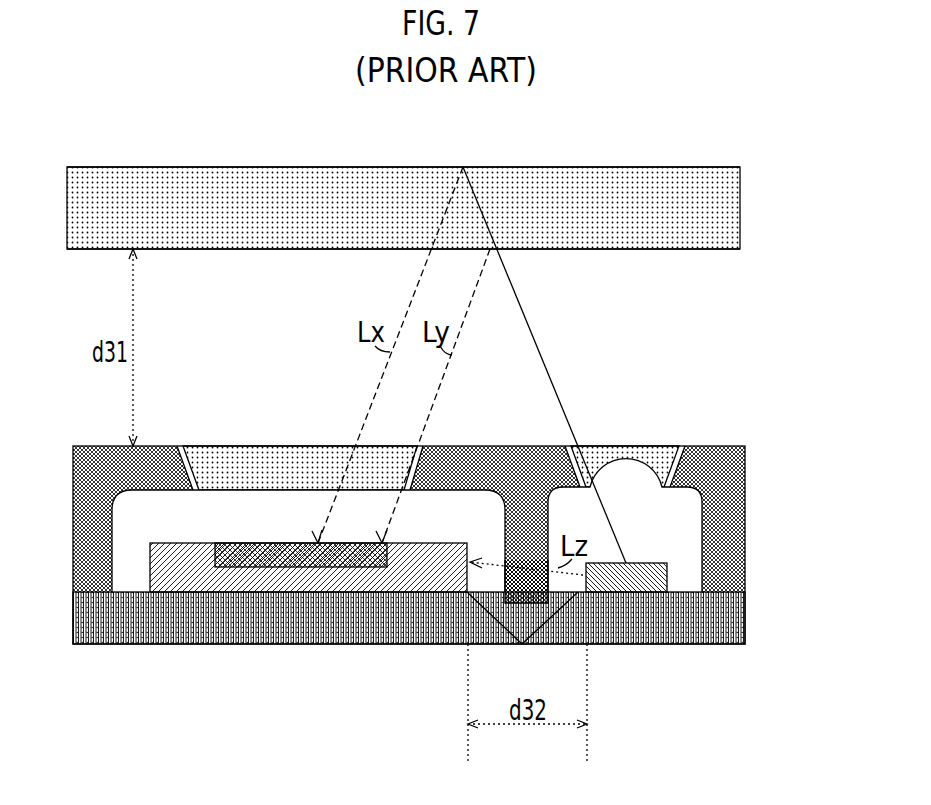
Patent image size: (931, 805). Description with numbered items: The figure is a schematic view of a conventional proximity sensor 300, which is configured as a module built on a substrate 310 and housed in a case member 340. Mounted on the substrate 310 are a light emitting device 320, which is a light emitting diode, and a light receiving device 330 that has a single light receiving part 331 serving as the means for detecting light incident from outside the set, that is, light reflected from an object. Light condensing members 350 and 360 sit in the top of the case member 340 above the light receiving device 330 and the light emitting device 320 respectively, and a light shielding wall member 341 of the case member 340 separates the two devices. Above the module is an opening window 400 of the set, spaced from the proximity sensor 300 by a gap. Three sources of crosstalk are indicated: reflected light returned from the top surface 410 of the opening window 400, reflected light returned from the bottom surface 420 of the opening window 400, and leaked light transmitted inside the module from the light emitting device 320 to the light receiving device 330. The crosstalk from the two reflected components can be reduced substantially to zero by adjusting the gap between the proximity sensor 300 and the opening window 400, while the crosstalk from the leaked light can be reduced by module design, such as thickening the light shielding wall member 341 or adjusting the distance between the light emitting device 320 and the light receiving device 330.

The proximity sensor 300 is at (449, 548).
The substrate 310 is at (425, 645).
The light emitting device 320 is at (663, 552).
The light receiving device 330 is at (462, 543).
The light receiving part 331 is at (305, 543).
The case member 340 is at (496, 446).
The light shielding wall member 341 is at (541, 516).
The light condensing member 350 is at (303, 446).
The light condensing member 360 is at (627, 446).
The opening window 400 is at (757, 167).
The top surface 410 is at (266, 167).
The bottom surface 420 is at (618, 249).